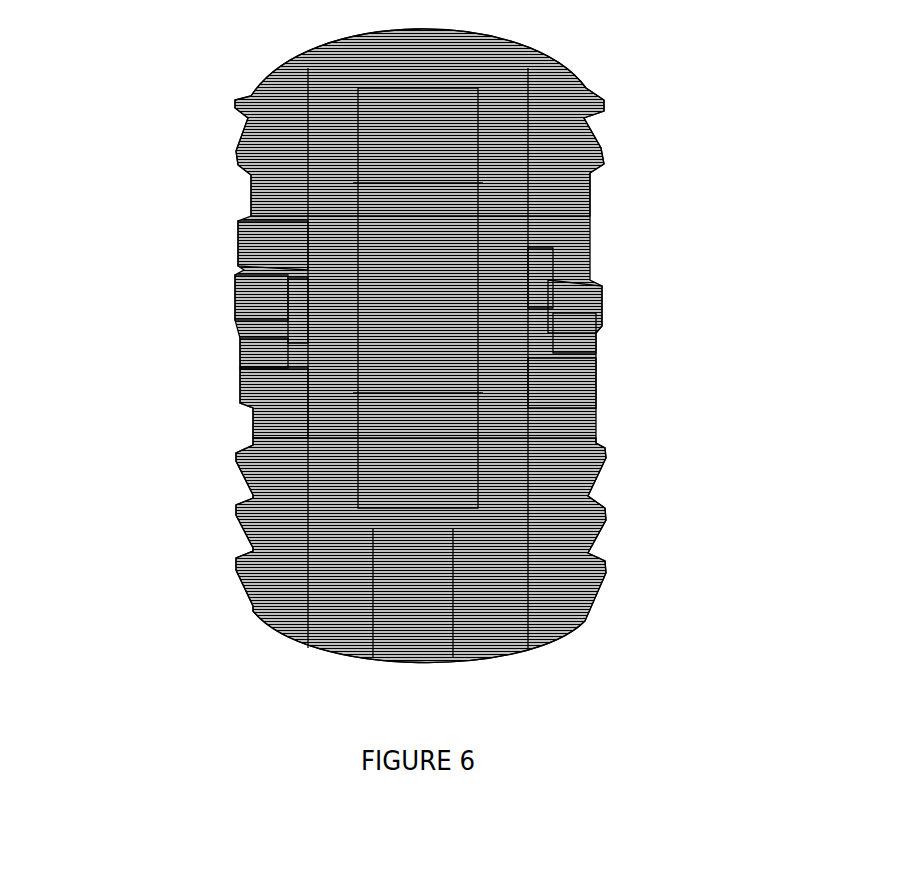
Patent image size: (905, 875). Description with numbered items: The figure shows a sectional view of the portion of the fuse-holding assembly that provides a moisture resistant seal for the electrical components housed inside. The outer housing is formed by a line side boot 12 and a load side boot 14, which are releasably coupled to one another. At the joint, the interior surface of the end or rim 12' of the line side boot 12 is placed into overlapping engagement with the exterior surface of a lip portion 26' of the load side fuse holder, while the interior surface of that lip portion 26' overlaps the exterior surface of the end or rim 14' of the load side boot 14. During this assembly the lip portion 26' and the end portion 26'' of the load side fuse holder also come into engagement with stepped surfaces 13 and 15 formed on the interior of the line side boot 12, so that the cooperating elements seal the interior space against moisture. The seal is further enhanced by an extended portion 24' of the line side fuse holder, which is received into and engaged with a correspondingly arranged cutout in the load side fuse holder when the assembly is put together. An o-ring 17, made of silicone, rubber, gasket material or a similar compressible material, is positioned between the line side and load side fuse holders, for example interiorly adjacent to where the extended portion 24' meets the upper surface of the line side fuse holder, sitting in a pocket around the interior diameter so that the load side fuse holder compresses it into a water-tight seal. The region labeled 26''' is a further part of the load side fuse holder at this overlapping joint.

The line side boot 12 is at (493, 550).
The end or rim of the line side boot 12' is at (650, 274).
The stepped surface 13 is at (578, 324).
The load side boot 14 is at (505, 122).
The end or rim of the load side boot 14' is at (180, 248).
The stepped surface 15 is at (558, 366).
The o-ring 17 is at (238, 398).
The extended portion 24' is at (209, 247).
The lip portion 26' is at (196, 297).
The end portion 26'' is at (197, 362).
The channel 26''' is at (625, 238).